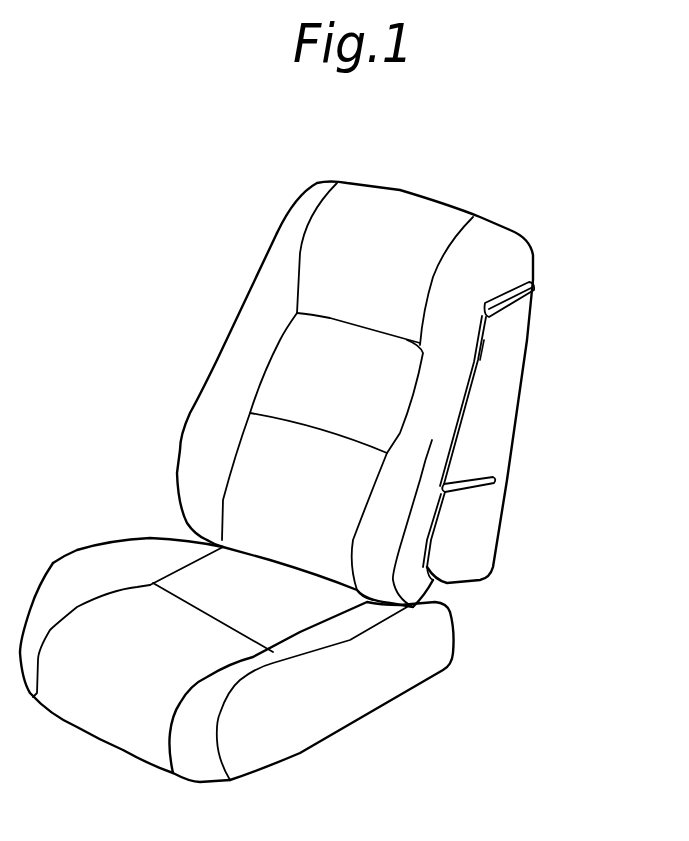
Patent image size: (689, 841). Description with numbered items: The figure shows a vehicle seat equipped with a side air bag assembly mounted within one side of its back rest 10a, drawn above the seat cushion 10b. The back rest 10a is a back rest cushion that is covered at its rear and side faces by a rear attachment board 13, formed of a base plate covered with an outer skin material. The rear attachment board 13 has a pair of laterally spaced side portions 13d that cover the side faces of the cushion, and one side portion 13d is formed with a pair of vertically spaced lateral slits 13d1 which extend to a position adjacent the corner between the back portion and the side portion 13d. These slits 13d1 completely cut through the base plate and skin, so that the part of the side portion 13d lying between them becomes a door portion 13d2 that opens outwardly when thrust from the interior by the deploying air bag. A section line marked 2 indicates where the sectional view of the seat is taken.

The back rest 10a is at (410, 183).
The seat cushion 10b is at (62, 563).
The rear attachment board 13 is at (528, 392).
The side portion 13d is at (467, 557).
The lateral slit 13d1 is at (517, 310).
The door portion 13d2 is at (500, 437).
The section line II-II 2 is at (366, 393).